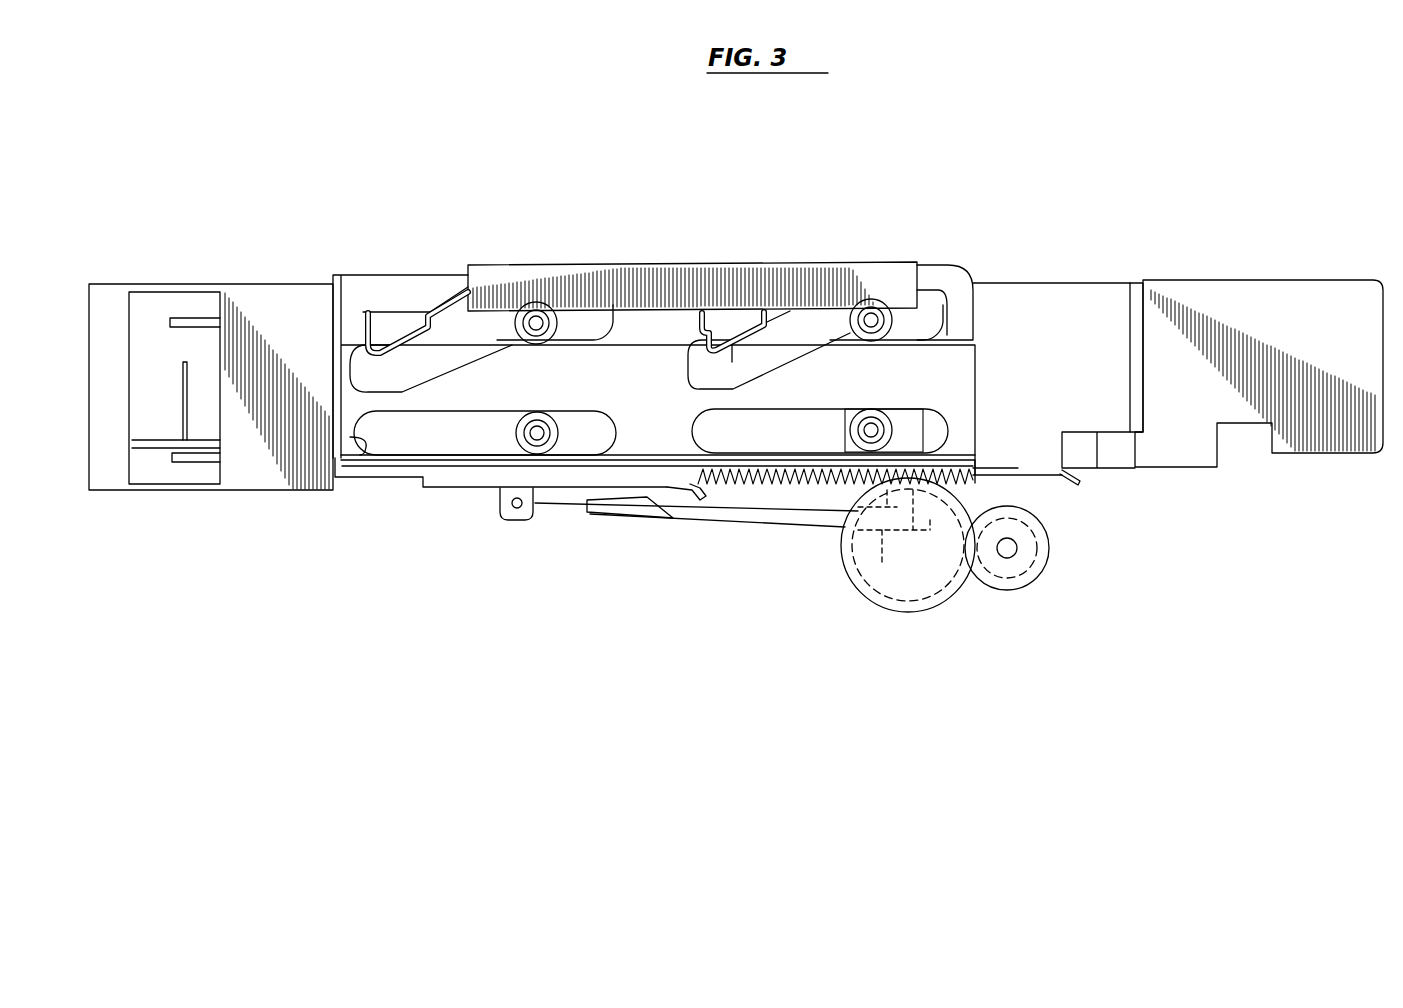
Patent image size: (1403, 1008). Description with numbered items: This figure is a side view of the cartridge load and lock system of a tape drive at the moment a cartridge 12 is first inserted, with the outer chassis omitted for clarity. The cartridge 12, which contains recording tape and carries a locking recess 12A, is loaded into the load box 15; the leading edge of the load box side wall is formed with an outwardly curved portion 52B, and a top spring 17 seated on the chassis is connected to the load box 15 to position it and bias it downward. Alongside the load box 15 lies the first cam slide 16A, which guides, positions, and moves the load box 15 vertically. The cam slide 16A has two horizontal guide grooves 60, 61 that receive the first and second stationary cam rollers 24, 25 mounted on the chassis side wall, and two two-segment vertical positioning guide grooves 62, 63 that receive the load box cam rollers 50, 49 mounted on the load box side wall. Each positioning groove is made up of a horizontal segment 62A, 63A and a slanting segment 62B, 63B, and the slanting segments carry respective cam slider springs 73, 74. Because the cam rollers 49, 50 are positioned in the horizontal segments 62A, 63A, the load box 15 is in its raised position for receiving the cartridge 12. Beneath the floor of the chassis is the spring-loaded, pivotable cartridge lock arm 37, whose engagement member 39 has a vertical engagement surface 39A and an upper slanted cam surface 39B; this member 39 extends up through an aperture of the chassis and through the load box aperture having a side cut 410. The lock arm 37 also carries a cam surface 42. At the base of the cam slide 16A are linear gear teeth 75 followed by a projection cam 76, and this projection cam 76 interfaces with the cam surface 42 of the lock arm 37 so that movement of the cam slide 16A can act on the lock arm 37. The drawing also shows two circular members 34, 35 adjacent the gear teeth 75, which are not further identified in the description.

The cartridge 12 is at (1283, 298).
The locking recess 12A is at (1117, 448).
The load box 15 is at (1065, 336).
The first cam slide 16A is at (958, 271).
The top spring 17 is at (682, 264).
The first stationary cam roller 24 is at (850, 428).
The second stationary cam roller 25 is at (517, 438).
The drive roller 34 is at (1050, 565).
The roller shaft 35 is at (912, 608).
The cartridge lock arm 37 is at (813, 517).
The engagement member 39 is at (908, 545).
The vertical engagement surface 39A is at (907, 527).
The upper slanted cam surface 39B is at (925, 460).
The side cut 410 is at (917, 432).
The cam surface 42 is at (627, 508).
The load box cam roller 49 is at (540, 320).
The load box cam roller 50 is at (873, 310).
The leading edge outwardly curved portion 52B is at (1132, 292).
The horizontal guide groove 60 is at (692, 422).
The horizontal guide groove 61 is at (350, 437).
The vertical positioning guide groove 62 is at (788, 352).
The horizontal segment 62A is at (913, 345).
The slanting segment 62B is at (775, 352).
The vertical positioning guide groove 63 is at (473, 352).
The horizontal segment 63A is at (565, 343).
The slanting segment 63B is at (413, 390).
The cam slider spring 73 is at (688, 365).
The cam slider spring 74 is at (363, 375).
The linear gear tooth 75 is at (793, 477).
The projection cam 76 is at (692, 493).